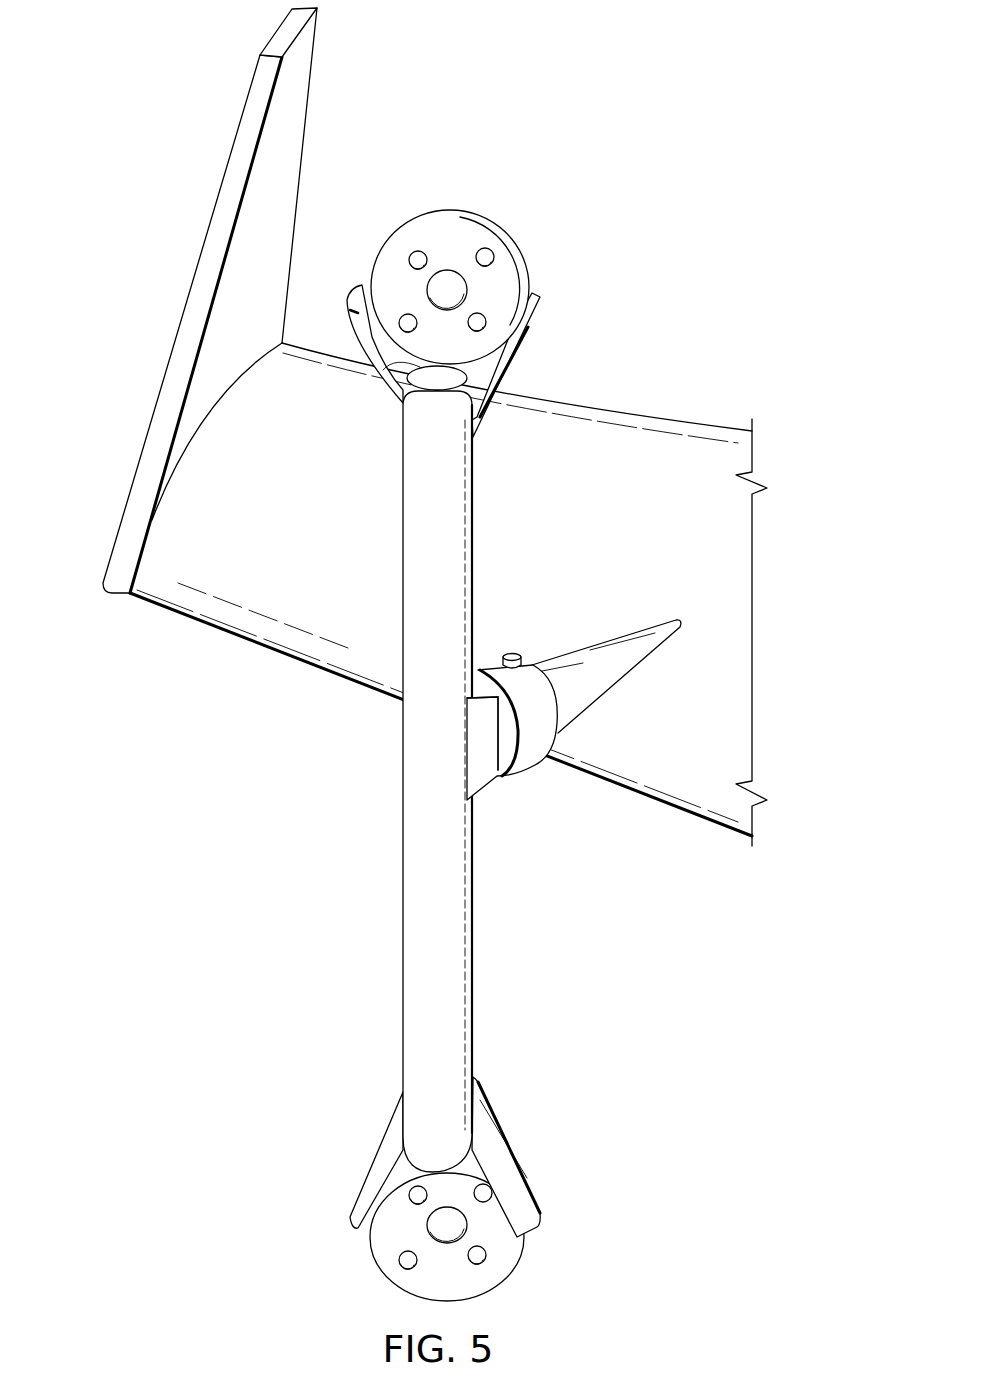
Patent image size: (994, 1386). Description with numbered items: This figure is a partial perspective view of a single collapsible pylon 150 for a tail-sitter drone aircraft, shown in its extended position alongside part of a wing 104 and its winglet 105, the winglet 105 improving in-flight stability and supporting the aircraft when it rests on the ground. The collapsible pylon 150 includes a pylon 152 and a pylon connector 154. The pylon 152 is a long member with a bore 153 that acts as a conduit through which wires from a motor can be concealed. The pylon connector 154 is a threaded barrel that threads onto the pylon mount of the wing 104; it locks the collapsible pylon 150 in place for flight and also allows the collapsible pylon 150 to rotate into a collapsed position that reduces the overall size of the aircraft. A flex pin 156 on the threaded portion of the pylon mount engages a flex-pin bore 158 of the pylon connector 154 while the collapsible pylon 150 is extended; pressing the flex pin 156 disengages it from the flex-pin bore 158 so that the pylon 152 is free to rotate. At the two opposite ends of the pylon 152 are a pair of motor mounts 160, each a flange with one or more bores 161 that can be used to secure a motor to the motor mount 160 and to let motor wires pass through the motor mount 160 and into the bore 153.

The wing 104 is at (651, 425).
The winglet 105 is at (223, 208).
The collapsible pylon 150 is at (475, 730).
The pylon 152 is at (402, 913).
The bore 153 is at (383, 368).
The pylon connector 154 is at (528, 768).
The flex pin 156 is at (512, 652).
The flex-pin bore 158 is at (557, 698).
The motor mount 160 is at (450, 730).
The bore 161 is at (487, 265).